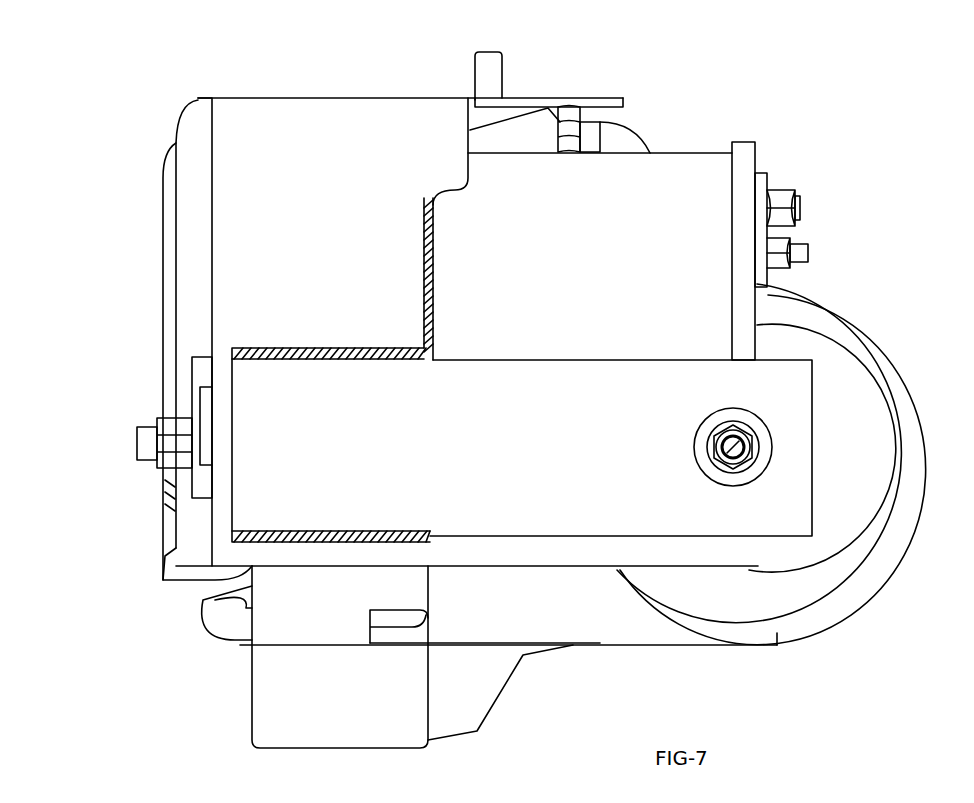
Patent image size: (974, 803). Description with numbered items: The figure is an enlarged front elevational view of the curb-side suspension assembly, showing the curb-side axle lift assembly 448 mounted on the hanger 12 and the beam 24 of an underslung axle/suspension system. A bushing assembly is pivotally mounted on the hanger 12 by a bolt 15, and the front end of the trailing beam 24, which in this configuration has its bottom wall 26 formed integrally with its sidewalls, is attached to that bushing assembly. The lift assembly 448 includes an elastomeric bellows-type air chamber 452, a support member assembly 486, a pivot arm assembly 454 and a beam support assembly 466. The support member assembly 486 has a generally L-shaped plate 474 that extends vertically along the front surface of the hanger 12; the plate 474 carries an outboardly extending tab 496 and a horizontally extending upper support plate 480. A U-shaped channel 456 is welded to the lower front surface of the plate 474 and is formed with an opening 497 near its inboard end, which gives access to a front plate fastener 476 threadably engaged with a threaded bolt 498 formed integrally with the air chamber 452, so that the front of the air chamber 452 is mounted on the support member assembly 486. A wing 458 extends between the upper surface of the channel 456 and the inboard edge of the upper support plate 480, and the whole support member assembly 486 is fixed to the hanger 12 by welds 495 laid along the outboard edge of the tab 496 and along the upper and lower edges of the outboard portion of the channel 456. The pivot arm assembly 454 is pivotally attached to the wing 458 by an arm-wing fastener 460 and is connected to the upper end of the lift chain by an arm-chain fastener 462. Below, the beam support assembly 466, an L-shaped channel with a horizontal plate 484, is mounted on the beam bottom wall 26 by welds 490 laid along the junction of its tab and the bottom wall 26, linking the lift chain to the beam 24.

The hanger 12 is at (320, 226).
The bolt 15 is at (135, 431).
The beam 24 is at (250, 690).
The bottom wall 26 is at (338, 679).
The curb-side axle lift assembly 448 is at (712, 125).
The air chamber 452 is at (847, 370).
The pivot arm assembly 454 is at (760, 173).
The channel 456 is at (400, 449).
The wing 458 is at (748, 142).
The arm-wing fastener 460 is at (800, 205).
The arm-chain fastener 462 is at (808, 250).
The beam support assembly 466 is at (713, 650).
The plate 474 is at (605, 276).
The front plate fastener 476 is at (722, 460).
The upper support plate 480 is at (678, 153).
The horizontal plate 484 is at (777, 645).
The support member assembly 486 is at (758, 314).
The welds 490 is at (392, 636).
The welds 495 is at (424, 300).
The tab 496 is at (455, 180).
The opening 497 is at (703, 427).
The threaded bolt 498 is at (748, 437).